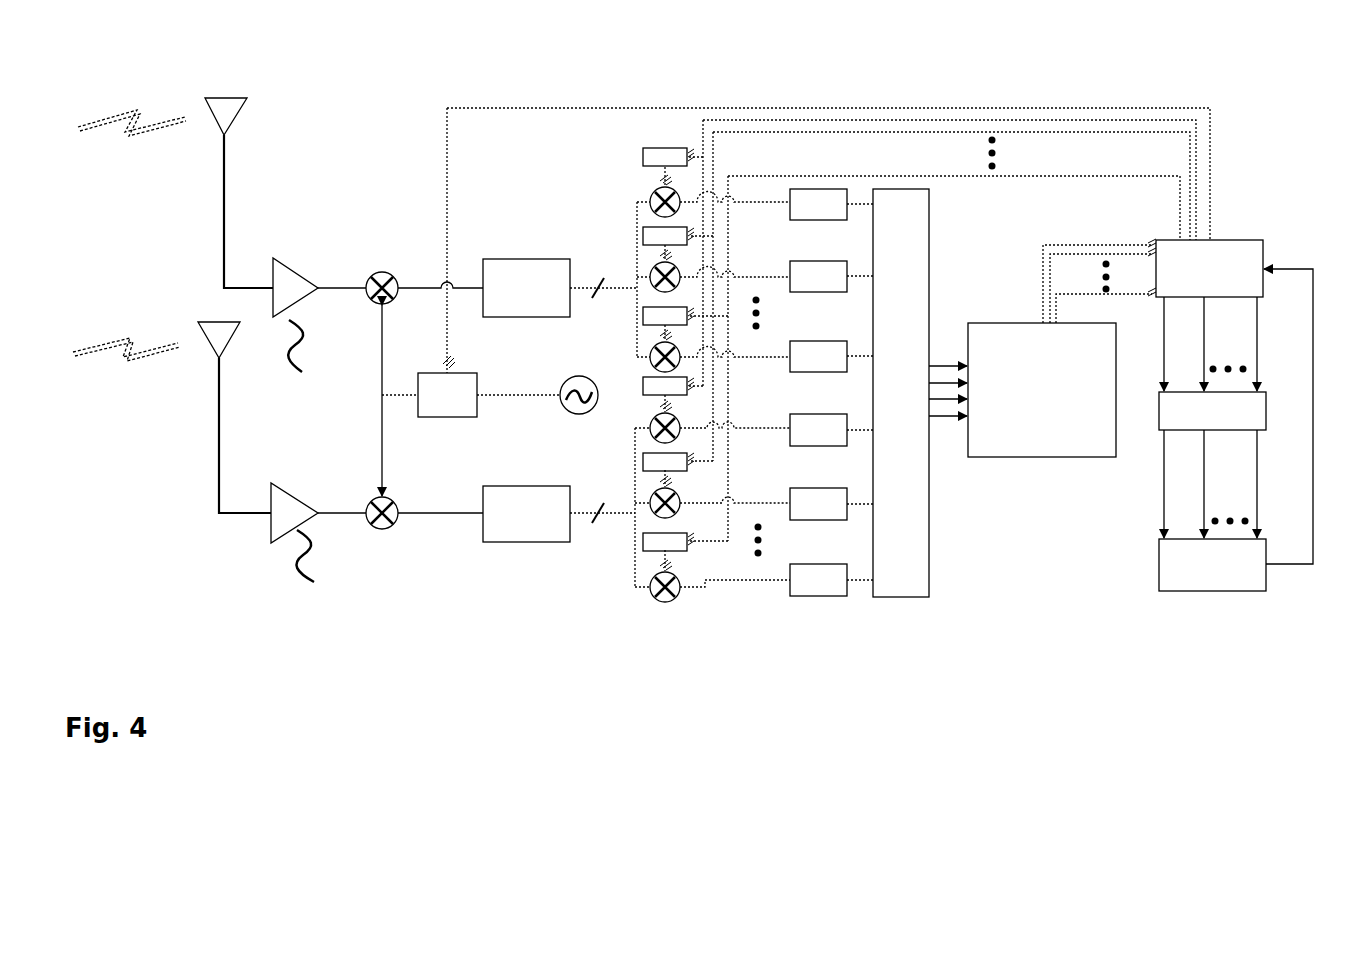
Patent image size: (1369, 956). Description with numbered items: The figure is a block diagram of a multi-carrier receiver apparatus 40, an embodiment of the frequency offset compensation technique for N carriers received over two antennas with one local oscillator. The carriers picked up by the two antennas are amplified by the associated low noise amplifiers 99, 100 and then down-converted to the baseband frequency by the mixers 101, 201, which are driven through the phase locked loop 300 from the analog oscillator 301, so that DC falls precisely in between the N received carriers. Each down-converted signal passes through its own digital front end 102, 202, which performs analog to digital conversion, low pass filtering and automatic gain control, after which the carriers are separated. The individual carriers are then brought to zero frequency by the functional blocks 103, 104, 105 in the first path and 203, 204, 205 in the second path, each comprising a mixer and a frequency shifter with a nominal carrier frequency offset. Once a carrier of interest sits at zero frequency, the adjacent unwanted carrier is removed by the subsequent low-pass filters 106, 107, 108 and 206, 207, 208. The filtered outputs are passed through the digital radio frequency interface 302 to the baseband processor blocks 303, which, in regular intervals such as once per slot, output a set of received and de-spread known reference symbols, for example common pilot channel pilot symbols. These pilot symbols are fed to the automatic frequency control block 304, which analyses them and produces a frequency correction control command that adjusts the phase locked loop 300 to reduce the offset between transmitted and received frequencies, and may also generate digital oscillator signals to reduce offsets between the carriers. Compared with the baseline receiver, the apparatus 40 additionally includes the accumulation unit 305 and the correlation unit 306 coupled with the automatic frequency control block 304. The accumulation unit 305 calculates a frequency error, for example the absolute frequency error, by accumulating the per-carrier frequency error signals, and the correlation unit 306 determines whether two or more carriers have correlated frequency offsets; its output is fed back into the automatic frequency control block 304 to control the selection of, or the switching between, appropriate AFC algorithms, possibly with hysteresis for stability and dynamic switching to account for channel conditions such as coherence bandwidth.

The apparatus 40 is at (677, 699).
The low noise amplifier 99 is at (295, 325).
The low noise amplifier 100 is at (307, 557).
The mixer 101 is at (382, 280).
The digital front end 102 is at (526, 288).
The functional block 103 is at (655, 182).
The functional block 104 is at (655, 259).
The functional block 105 is at (655, 339).
The low-pass filter 106 is at (818, 196).
The low-pass filter 107 is at (818, 268).
The low-pass filter 108 is at (818, 348).
The mixer 201 is at (382, 524).
The digital front end 202 is at (526, 514).
The functional block 203 is at (654, 410).
The functional block 204 is at (654, 485).
The functional block 205 is at (654, 567).
The low-pass filter 206 is at (818, 421).
The low-pass filter 207 is at (818, 495).
The low-pass filter 208 is at (818, 571).
The phase locked loop 300 is at (447, 395).
The analog oscillator 301 is at (579, 396).
The digital radio frequency interface 302 is at (901, 393).
The baseband processor blocks 303 is at (1042, 390).
The automatic frequency control block 304 is at (1209, 268).
The accumulation unit 305 is at (1212, 411).
The correlation unit 306 is at (1212, 565).